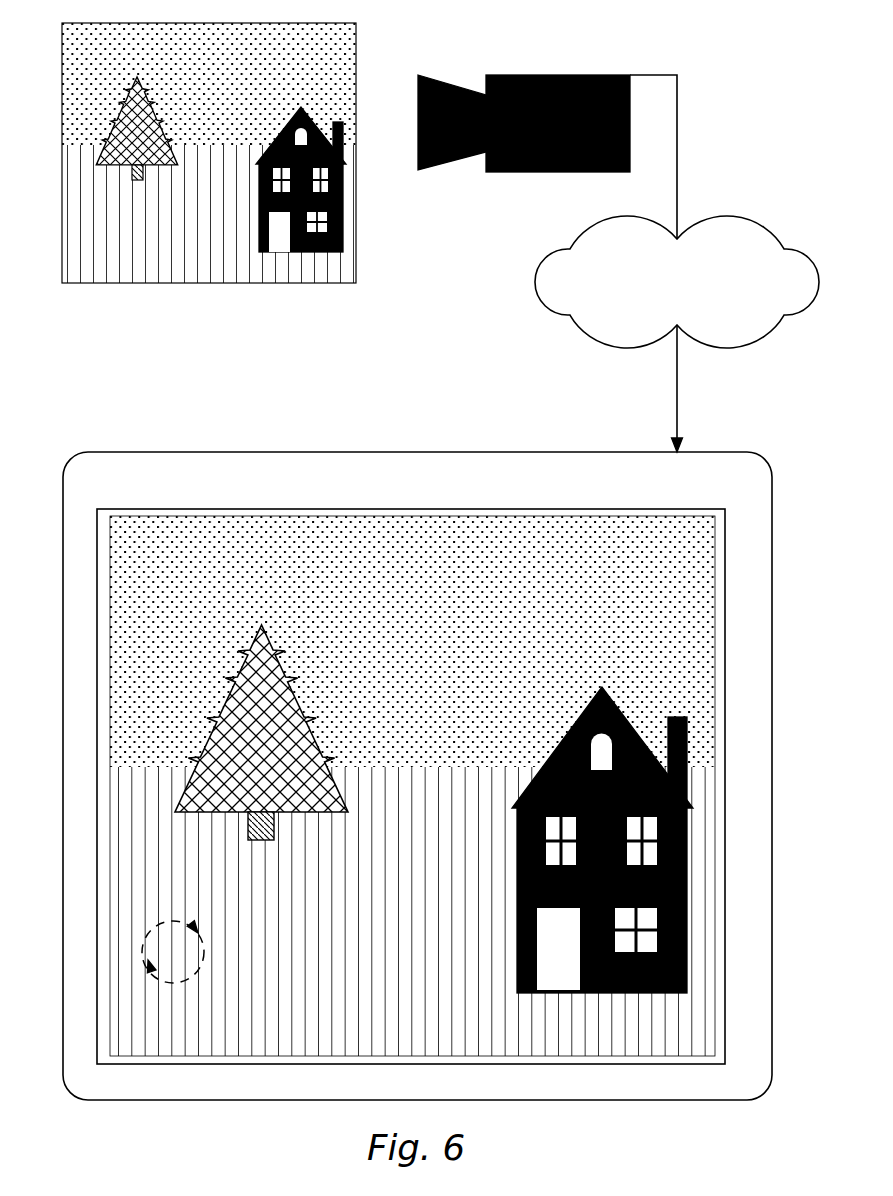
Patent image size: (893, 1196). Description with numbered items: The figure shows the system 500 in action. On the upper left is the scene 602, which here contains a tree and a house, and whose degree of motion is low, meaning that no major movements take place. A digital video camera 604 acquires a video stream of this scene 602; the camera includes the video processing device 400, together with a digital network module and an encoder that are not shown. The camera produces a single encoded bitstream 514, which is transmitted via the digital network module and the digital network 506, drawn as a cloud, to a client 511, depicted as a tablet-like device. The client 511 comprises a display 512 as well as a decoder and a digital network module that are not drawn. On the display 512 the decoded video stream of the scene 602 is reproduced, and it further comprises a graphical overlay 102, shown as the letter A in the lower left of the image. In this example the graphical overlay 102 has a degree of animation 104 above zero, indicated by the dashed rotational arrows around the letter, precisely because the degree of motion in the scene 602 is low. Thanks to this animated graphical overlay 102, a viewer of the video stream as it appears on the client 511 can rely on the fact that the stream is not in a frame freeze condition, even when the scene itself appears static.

The graphical overlay 102 is at (198, 1022).
The degree of animation 104 is at (145, 933).
The video processing device 400 is at (543, 86).
The system 500 is at (618, 226).
The digital network 506 is at (659, 292).
The client 511 is at (412, 433).
The display 512 is at (493, 517).
The single encoded bitstream 514 is at (677, 163).
The scene 602 is at (213, 282).
The digital video camera 604 is at (520, 75).